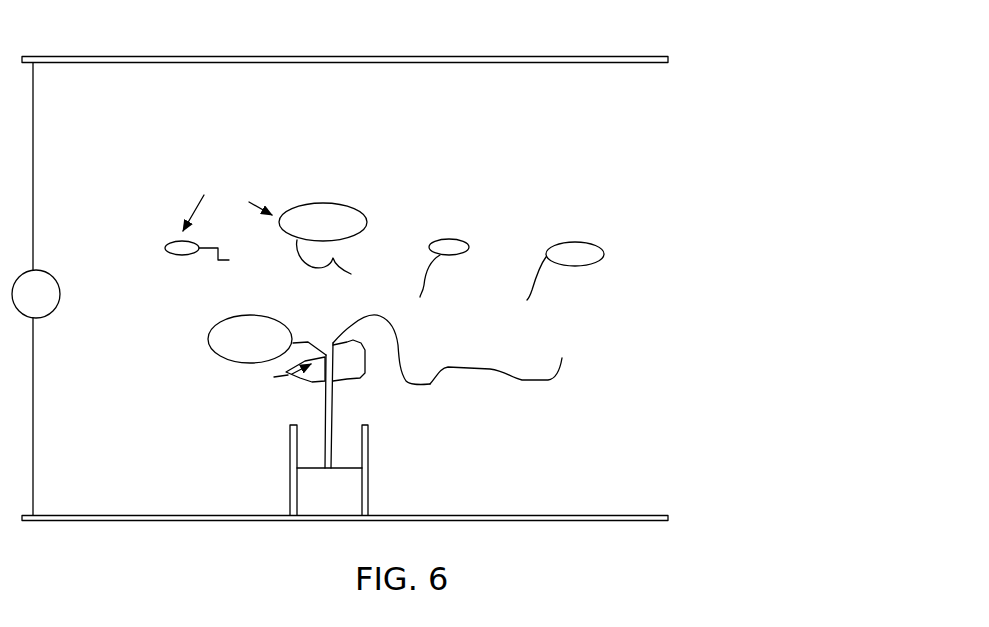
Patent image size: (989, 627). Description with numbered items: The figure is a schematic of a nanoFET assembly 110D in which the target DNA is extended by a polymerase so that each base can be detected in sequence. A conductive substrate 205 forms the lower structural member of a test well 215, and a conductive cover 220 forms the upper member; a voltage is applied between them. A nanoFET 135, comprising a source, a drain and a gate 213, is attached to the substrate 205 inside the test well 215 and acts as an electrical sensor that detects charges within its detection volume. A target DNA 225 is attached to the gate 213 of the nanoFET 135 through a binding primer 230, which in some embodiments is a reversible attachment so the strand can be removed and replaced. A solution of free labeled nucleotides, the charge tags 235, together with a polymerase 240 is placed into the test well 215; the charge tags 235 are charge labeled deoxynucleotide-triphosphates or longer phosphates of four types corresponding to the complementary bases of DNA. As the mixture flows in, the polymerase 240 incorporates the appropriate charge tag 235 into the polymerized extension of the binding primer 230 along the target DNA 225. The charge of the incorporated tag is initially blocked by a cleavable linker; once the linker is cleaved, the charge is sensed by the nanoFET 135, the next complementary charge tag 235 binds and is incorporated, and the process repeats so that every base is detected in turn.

The nanoFET assembly 110D is at (103, 46).
The cover 220 is at (668, 59).
The substrate 205 is at (668, 518).
The test well 215 is at (675, 296).
The charge tags 235 is at (180, 256).
The target DNA 225 is at (553, 380).
The polymerase 240 is at (360, 378).
The binding primer 230 is at (322, 461).
The nanoFET 135 is at (375, 448).
The gate 213 is at (357, 489).